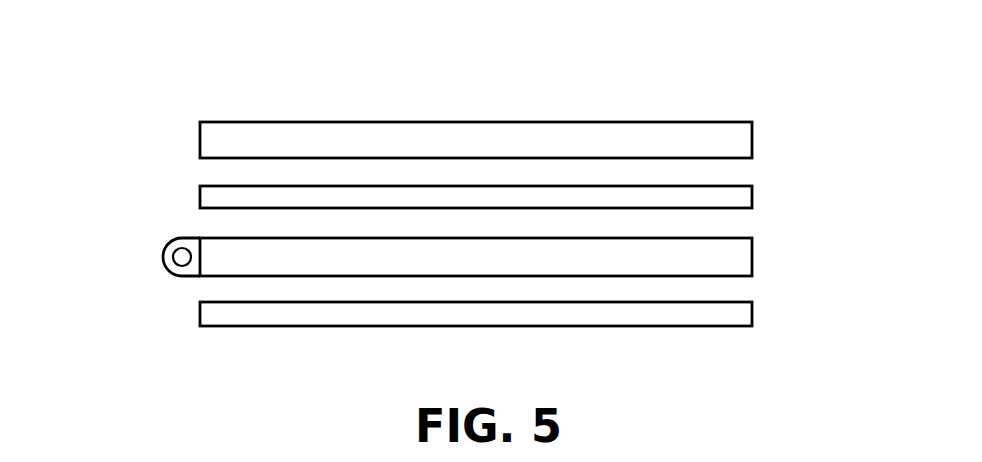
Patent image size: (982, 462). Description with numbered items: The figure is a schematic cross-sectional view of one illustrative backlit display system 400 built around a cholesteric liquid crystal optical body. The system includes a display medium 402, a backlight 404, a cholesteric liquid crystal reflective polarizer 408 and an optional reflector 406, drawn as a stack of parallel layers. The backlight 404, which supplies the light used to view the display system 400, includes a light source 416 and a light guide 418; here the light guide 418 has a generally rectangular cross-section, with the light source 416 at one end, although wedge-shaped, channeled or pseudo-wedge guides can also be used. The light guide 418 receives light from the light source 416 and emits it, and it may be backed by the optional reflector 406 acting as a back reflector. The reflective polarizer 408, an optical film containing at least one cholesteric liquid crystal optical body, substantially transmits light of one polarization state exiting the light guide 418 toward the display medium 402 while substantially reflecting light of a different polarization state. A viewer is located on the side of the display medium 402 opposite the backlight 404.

The backlit display system 400 is at (448, 102).
The display medium 402 is at (733, 138).
The cholesteric liquid crystal reflective polarizer 408 is at (733, 198).
The backlight 404 is at (733, 259).
The light guide 418 is at (218, 238).
The light source 416 is at (172, 257).
The optional reflector 406 is at (220, 315).